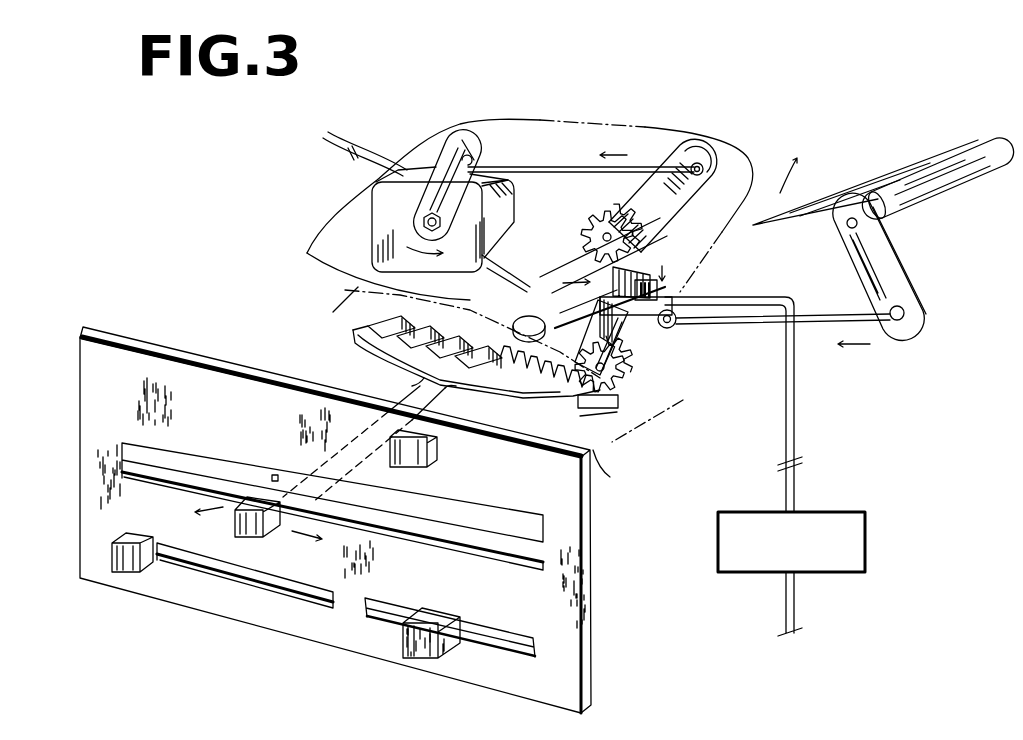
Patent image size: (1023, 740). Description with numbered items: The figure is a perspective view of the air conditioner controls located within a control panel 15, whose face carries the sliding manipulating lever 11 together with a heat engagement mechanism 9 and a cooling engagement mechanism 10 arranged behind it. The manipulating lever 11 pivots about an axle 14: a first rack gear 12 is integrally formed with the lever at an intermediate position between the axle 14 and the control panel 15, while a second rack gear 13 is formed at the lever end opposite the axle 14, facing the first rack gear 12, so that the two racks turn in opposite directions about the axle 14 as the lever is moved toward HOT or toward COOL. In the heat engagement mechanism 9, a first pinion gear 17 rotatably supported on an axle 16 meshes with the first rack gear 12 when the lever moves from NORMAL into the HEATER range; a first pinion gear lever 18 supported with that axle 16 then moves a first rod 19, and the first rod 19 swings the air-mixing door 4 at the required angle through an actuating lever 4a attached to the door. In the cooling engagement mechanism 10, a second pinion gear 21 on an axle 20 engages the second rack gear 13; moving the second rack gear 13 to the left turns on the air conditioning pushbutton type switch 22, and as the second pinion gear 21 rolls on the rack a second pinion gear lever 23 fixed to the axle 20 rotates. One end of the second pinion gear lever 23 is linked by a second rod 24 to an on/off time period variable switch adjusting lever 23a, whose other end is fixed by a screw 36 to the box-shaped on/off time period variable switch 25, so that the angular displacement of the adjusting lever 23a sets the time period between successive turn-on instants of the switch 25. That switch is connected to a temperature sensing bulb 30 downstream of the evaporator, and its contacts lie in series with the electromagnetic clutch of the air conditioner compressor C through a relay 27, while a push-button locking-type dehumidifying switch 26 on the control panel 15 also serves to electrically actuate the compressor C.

The air-mixing door 4 is at (950, 180).
The actuating lever 4a is at (880, 273).
The heat engagement mechanism 9 is at (657, 417).
The cooling engagement mechanism 10 is at (640, 128).
The manipulating lever 11 is at (262, 538).
The first rack gear 12 is at (617, 394).
The second rack gear 13 is at (648, 262).
The axle 14 is at (528, 316).
The control panel 15 is at (594, 650).
The axle 16 is at (628, 374).
The first pinion gear 17 is at (602, 372).
The first pinion gear lever 18 is at (670, 336).
The first rod 19 is at (813, 322).
The axle 20 is at (594, 228).
The second pinion gear 21 is at (652, 227).
The air conditioning pushbutton type switch 22 is at (665, 290).
The second pinion gear lever 23 is at (708, 162).
The on/off time period variable switch adjusting lever 23a is at (452, 140).
The second rod 24 is at (542, 165).
The on/off time period variable switch 25 is at (372, 205).
The push-button locking-type dehumidifying switch 26 is at (430, 456).
The relay 27 is at (663, 474).
The temperature sensing bulb 30 is at (351, 139).
The screw 36 is at (424, 223).
The air conditioner compressor C is at (867, 548).